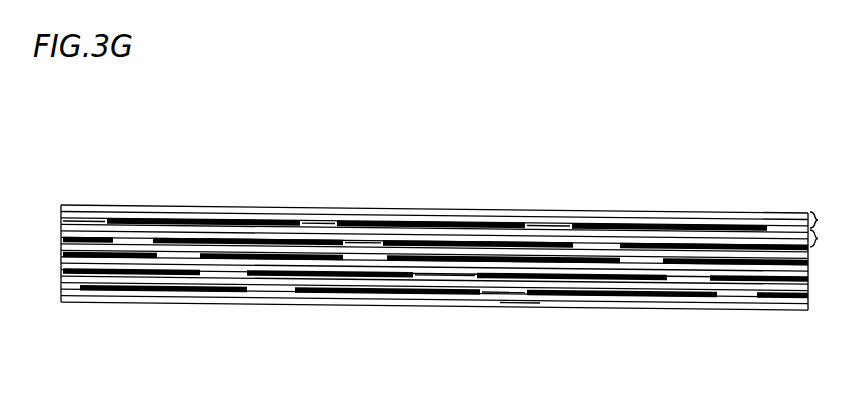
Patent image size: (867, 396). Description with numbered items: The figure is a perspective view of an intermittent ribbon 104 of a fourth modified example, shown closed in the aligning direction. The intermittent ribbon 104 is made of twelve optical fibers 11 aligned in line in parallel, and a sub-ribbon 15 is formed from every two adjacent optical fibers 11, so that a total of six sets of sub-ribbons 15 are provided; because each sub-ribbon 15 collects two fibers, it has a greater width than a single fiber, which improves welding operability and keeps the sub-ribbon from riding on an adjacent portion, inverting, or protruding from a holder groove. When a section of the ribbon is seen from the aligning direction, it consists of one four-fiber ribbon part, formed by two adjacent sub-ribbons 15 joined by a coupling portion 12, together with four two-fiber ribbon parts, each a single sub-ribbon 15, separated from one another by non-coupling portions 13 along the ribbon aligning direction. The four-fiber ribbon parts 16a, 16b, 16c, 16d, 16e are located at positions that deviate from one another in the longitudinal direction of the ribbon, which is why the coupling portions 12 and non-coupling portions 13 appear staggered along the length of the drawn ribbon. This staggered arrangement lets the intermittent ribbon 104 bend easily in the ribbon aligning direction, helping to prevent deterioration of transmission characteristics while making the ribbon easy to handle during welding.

The intermittent ribbon 104 is at (668, 202).
The optical fiber 11 is at (61, 234).
The coupling portion 12 is at (83, 218).
The non-coupling portion 13 is at (157, 220).
The sub-ribbon 15 is at (826, 229).
The 4-fiber ribbon part 16a is at (323, 209).
The 4-fiber ribbon part 16b is at (372, 230).
The 4-fiber ribbon part 16c is at (417, 271).
The 4-fiber ribbon part 16d is at (468, 286).
The 4-fiber ribbon part 16e is at (522, 306).